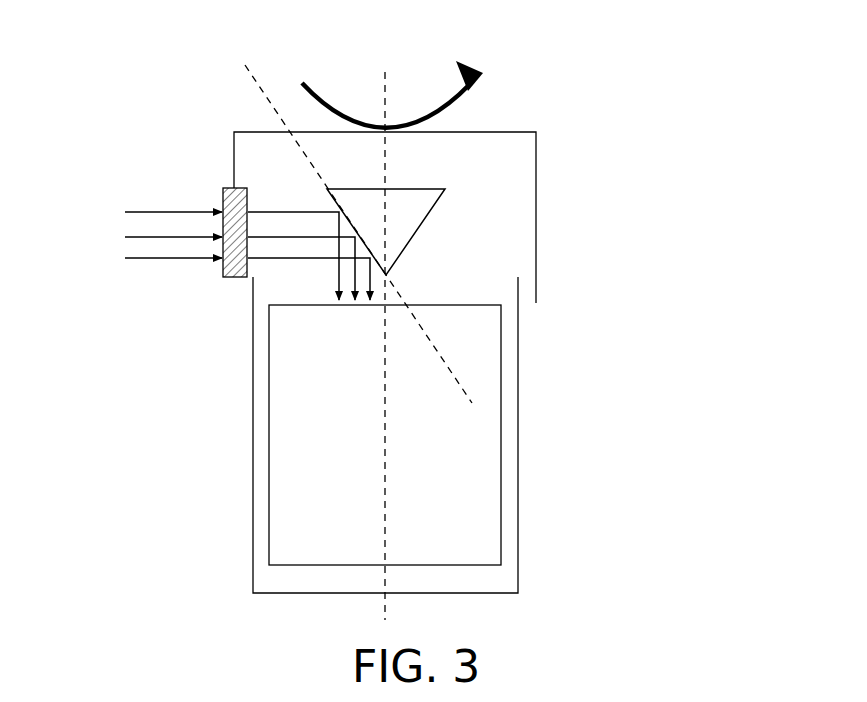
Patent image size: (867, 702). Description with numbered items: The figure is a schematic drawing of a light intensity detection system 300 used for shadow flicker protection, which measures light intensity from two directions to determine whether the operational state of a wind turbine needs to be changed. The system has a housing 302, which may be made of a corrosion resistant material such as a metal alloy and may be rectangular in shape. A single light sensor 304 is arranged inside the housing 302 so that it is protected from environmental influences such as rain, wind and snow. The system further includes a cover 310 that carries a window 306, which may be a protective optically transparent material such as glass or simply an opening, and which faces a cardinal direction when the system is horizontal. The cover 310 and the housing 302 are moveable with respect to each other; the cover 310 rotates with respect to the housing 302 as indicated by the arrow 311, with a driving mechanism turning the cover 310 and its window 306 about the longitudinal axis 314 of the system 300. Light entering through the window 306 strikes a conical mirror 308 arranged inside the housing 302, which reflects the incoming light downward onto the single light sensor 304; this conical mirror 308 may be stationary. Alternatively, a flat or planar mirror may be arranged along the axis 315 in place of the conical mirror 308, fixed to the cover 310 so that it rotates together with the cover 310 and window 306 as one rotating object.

The light intensity detection system 300 is at (168, 106).
The housing 302 is at (518, 423).
The single light sensor 304 is at (502, 533).
The window 306 is at (228, 277).
The conical mirror 308 is at (410, 228).
The cover 310 is at (537, 140).
The arrow 311 is at (474, 87).
The longitudinal axis 314 is at (387, 72).
The axis 315 is at (243, 65).